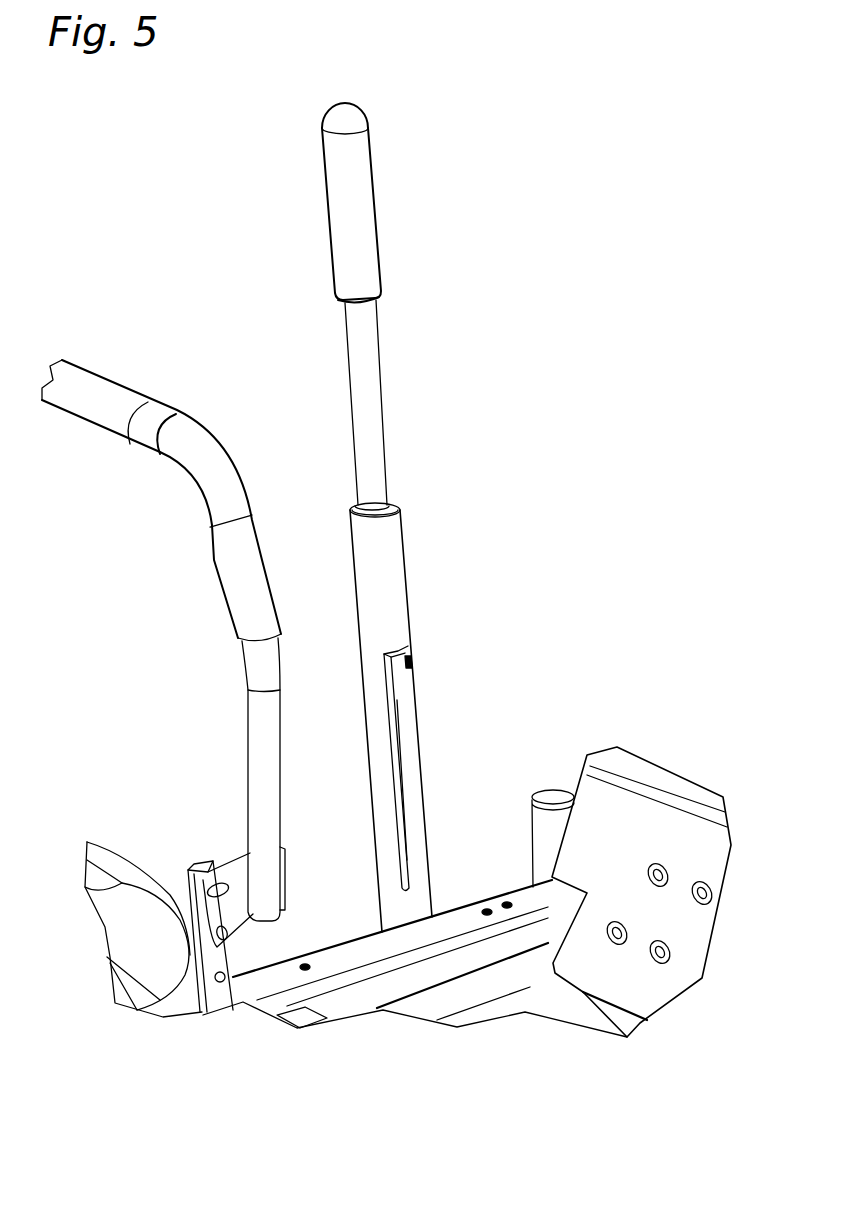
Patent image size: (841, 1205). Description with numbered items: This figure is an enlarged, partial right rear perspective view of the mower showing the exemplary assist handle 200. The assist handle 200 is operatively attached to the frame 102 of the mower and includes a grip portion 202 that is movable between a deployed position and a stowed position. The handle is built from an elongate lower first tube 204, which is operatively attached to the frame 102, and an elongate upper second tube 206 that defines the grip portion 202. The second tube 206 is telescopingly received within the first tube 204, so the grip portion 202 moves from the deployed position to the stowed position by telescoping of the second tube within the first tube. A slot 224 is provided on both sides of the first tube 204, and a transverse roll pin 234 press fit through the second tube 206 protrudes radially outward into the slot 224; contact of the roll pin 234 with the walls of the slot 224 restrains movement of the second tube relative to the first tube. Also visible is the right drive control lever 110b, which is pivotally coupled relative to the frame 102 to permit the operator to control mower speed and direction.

The frame 102 is at (493, 897).
The right drive control lever 110b is at (103, 373).
The assist handle 200 is at (408, 542).
The grip portion 202 is at (378, 207).
The first tube 204 is at (408, 585).
The second tube 206 is at (383, 427).
The slot 224 is at (388, 698).
The roll pin 234 is at (412, 662).